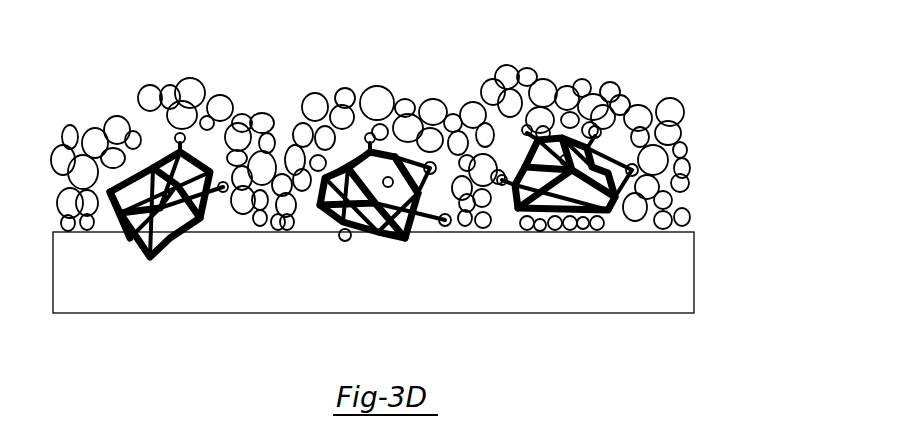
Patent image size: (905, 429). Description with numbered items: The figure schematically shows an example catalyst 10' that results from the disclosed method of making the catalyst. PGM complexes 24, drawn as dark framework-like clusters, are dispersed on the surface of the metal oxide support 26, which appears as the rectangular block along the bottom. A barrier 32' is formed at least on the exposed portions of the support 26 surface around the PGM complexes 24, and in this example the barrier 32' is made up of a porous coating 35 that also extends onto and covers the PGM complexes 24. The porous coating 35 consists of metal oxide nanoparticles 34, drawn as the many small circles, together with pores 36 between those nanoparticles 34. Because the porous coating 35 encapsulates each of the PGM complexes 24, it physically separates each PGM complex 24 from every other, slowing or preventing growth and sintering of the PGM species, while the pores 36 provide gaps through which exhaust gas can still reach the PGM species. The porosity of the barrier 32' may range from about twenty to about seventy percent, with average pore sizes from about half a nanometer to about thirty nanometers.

The catalyst 10' is at (385, 180).
The PGM complexes 24 is at (212, 146).
The support 26 is at (677, 275).
The barrier 32' is at (375, 146).
The porous coating 35 is at (650, 82).
The nanoparticles 34 is at (374, 98).
The pores 36 is at (70, 187).